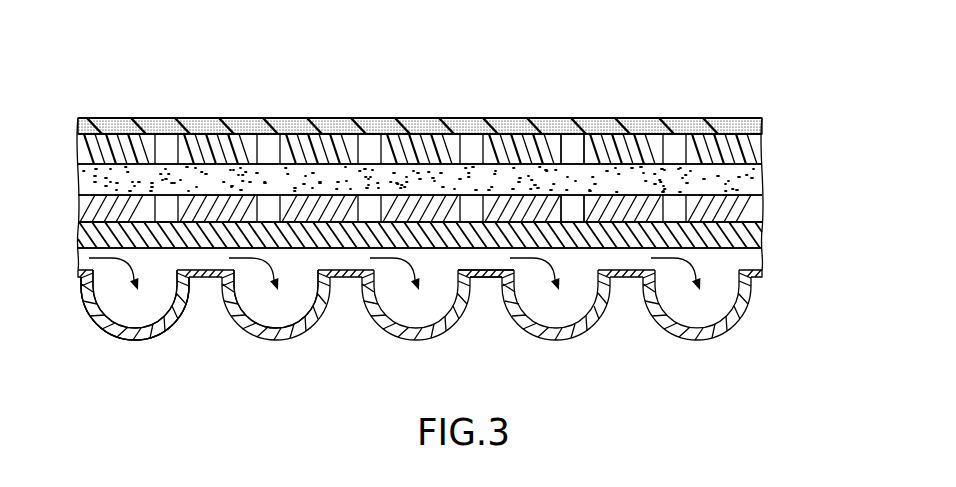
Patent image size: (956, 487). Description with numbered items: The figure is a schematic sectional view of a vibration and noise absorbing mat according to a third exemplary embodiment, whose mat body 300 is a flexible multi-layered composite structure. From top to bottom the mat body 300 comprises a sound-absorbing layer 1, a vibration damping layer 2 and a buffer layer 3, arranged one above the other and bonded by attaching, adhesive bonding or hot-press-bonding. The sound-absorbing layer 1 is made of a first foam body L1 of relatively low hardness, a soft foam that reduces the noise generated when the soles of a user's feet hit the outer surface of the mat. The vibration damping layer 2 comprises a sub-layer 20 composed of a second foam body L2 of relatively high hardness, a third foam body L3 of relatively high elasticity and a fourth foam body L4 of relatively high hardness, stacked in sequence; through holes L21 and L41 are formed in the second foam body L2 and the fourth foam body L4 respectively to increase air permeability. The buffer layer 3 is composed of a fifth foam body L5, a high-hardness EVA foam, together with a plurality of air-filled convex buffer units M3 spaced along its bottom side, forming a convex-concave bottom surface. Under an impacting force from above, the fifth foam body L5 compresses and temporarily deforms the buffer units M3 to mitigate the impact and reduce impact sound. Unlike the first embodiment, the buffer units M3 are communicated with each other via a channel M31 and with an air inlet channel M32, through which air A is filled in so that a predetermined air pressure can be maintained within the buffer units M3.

The mat body 300 is at (430, 84).
The sound-absorbing layer 1 is at (76, 118).
The vibration damping layer 2 is at (72, 270).
The buffer layer 3 is at (76, 340).
The sub-layer 20 is at (826, 135).
The first foam body L1 is at (762, 124).
The second foam body L2 is at (745, 150).
The through holes L21 is at (572, 147).
The third foam body L3 is at (742, 178).
The fourth foam body L4 is at (745, 207).
The through holes L41 is at (580, 208).
The fifth foam body L5 is at (752, 233).
The buffer units M3 is at (723, 330).
The channel M31 is at (485, 276).
The air inlet channel M32 is at (82, 280).
The air A is at (234, 293).